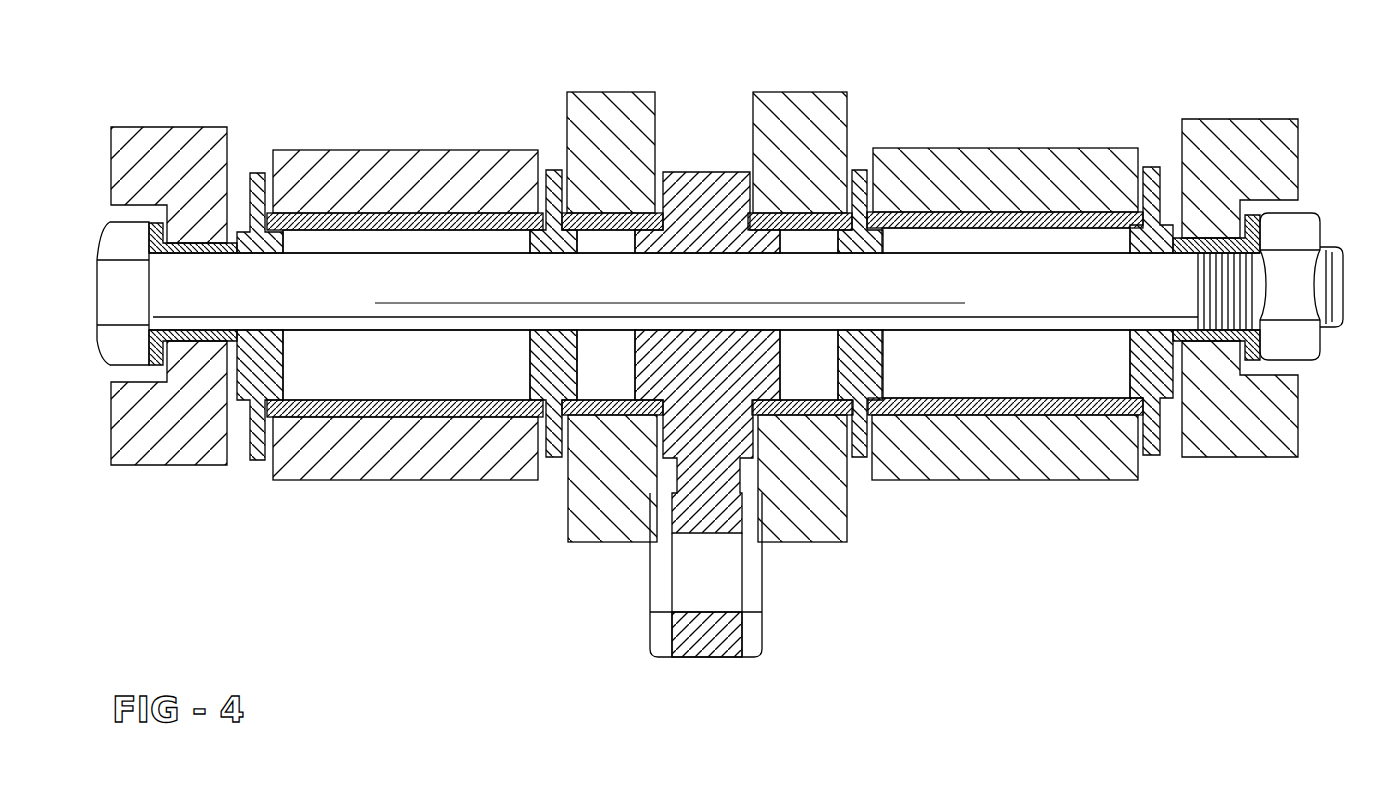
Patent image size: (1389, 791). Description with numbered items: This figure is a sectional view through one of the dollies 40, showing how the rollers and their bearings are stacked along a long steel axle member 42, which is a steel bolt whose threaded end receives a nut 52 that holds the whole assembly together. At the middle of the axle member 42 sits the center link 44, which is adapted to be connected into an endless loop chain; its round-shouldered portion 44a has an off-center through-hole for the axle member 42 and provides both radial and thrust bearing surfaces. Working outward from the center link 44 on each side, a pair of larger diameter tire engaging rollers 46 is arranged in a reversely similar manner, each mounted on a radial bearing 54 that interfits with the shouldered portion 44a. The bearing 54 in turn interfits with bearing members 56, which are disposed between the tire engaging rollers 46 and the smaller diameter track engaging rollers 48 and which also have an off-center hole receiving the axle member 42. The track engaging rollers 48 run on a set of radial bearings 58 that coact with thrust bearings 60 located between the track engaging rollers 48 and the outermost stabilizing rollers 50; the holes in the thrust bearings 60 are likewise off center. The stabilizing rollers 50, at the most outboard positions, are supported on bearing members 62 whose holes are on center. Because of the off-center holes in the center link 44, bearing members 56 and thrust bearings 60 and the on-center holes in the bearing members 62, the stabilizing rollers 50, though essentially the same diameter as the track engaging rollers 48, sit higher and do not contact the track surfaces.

The dolly 40 is at (498, 103).
The axle member 42 is at (110, 293).
The center link 44 is at (762, 578).
The round-shouldered portion 44a is at (708, 172).
The tire engaging rollers 46 is at (608, 91).
The track engaging rollers 48 is at (348, 150).
The stabilizing rollers 50 is at (162, 127).
The nut 52 is at (1310, 233).
The radial bearing 54 is at (808, 232).
The bearing members 56 is at (885, 237).
The radial bearings 58 is at (1042, 228).
The thrust bearings 60 is at (1150, 237).
The bearing members 62 is at (1250, 218).